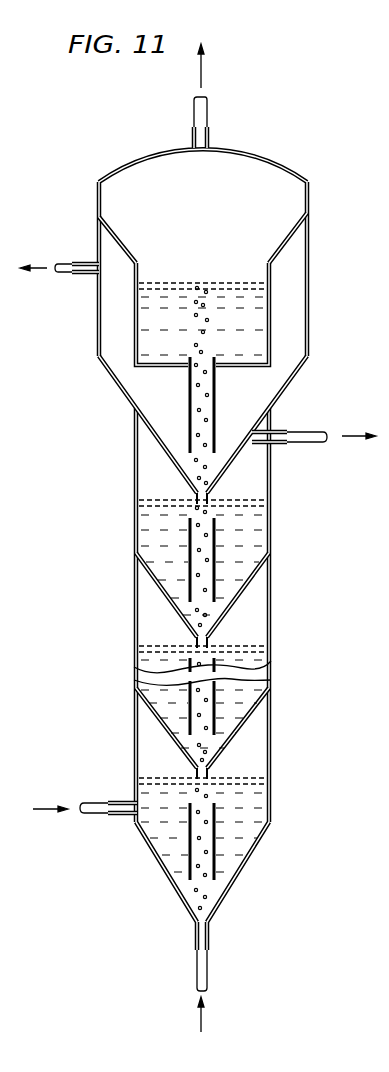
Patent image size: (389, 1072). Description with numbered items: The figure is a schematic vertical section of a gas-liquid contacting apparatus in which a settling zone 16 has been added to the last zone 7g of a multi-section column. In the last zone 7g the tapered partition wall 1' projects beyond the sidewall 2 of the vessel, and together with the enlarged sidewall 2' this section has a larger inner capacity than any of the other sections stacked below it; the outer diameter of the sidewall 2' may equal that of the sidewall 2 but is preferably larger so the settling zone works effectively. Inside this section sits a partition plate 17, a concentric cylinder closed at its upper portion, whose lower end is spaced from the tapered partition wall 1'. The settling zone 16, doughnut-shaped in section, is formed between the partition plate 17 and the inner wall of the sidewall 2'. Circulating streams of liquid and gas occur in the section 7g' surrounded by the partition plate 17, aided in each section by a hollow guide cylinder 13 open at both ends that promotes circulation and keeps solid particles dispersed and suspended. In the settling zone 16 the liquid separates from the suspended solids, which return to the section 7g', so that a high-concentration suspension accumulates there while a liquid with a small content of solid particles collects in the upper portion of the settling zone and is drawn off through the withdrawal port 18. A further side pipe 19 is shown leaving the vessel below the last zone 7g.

The sidewall 2 is at (226, 699).
The sidewall of the settling zone 2' is at (233, 226).
The tapered partition wall 1' is at (203, 614).
The guide cylinder 13 is at (188, 394).
The settling zone 16 is at (107, 318).
The partition plate 17 is at (137, 337).
The withdrawal port 18 is at (66, 262).
The side outlet pipe 19 is at (300, 440).
The last zone 7g is at (238, 491).
The section surrounded by the partition plate 7g' is at (205, 270).